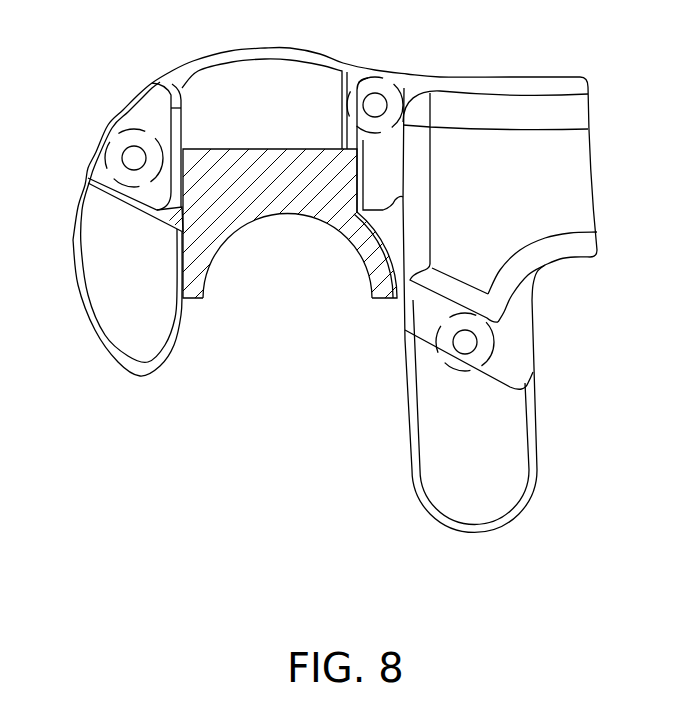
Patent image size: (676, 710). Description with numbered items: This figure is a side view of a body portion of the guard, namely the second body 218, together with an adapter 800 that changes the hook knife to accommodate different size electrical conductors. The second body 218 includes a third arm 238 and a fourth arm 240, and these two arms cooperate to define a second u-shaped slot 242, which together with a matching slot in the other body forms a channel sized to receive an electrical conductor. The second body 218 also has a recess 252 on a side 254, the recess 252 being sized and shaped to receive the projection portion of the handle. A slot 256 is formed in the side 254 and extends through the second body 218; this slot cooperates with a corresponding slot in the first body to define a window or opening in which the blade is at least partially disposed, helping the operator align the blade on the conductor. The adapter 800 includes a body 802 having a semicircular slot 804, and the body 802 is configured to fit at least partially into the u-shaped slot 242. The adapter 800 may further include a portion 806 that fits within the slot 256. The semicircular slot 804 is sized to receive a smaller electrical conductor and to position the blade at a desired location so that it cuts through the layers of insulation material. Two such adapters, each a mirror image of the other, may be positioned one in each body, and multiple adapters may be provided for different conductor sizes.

The adapter 800 is at (223, 123).
The slot 256 is at (275, 80).
The portion 806 is at (307, 149).
The semicircular slot 804 is at (294, 280).
The body 802 is at (386, 300).
The side 254 is at (418, 82).
The second body 218 is at (101, 132).
The recess 252 is at (540, 193).
The fourth arm 240 is at (146, 364).
The third arm 238 is at (485, 526).
The second u-shaped slot 242 is at (307, 437).